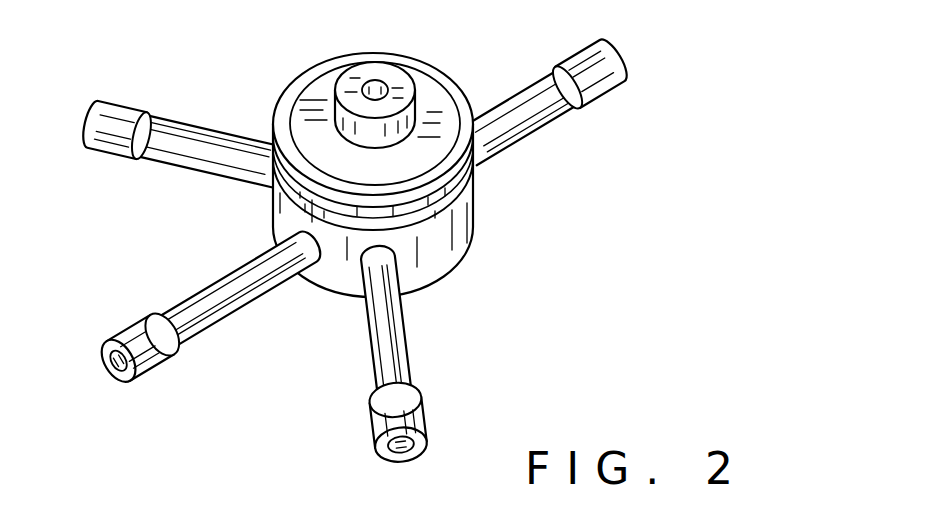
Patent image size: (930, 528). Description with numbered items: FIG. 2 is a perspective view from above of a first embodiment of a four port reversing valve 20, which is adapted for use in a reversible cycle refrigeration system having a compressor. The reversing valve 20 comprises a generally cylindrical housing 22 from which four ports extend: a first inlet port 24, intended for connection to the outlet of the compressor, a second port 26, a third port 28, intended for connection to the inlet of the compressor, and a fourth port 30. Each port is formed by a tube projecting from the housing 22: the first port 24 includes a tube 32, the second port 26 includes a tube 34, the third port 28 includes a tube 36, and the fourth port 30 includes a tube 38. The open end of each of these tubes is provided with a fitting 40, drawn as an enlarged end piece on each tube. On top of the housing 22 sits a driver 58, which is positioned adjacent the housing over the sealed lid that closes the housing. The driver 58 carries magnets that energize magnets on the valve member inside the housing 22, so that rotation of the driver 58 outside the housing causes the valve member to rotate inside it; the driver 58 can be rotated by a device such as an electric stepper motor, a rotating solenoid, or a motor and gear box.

The reversing valve 20 is at (375, 242).
The housing 22 is at (475, 195).
The first inlet port 24 is at (240, 306).
The second port 26 is at (207, 166).
The third port 28 is at (546, 126).
The fourth port 30 is at (409, 323).
The tube 32 is at (253, 278).
The tube 34 is at (240, 158).
The tube 36 is at (500, 133).
The tube 38 is at (382, 330).
The fitting 40 is at (123, 120).
The driver 58 is at (424, 78).